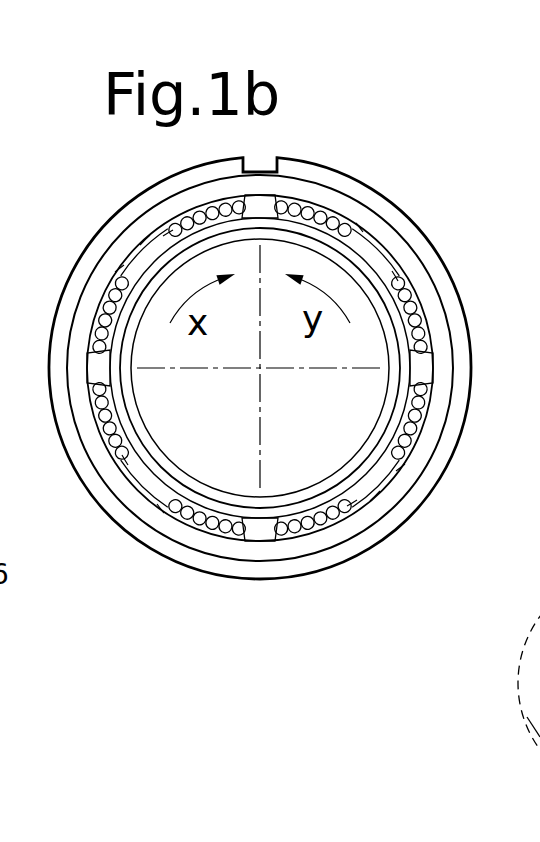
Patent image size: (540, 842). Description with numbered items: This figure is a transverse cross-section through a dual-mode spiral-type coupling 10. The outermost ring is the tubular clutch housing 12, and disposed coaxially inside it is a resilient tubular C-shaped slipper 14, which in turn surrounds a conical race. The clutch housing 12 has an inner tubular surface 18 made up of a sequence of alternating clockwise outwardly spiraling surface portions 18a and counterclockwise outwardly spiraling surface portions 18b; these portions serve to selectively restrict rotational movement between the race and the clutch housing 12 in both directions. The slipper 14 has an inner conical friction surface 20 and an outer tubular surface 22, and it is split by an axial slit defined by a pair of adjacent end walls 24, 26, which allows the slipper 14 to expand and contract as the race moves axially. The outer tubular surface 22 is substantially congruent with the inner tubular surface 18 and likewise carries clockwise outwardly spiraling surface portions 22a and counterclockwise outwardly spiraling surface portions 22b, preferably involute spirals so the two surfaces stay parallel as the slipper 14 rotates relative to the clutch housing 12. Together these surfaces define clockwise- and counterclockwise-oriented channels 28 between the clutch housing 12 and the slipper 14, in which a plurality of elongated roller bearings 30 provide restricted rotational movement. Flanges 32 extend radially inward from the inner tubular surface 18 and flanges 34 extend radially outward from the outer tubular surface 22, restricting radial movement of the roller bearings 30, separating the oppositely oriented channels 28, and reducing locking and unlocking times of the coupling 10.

The dual-mode spiral-type coupling 10 is at (188, 604).
The tubular clutch housing 12 is at (282, 572).
The resilient tubular C-shaped slipper 14 is at (367, 473).
The inner tubular surface 18 is at (377, 240).
The clockwise outwardly spiraling surface portions 18a is at (337, 205).
The counterclockwise outwardly spiraling surface portions 18b is at (195, 236).
The inner conical friction surface 20 is at (158, 468).
The outer tubular surface 22 is at (150, 496).
The clockwise outwardly spiraling surface portions 22a is at (367, 225).
The counterclockwise outwardly spiraling surface portions 22b is at (147, 212).
The end wall 24 is at (408, 365).
The end wall 26 is at (403, 378).
The channels 28 is at (147, 240).
The elongated roller bearings 30 is at (215, 530).
The flanges 32 is at (173, 235).
The flanges 34 is at (246, 200).